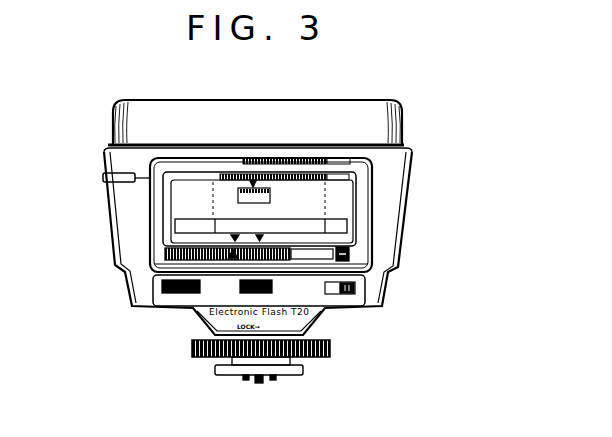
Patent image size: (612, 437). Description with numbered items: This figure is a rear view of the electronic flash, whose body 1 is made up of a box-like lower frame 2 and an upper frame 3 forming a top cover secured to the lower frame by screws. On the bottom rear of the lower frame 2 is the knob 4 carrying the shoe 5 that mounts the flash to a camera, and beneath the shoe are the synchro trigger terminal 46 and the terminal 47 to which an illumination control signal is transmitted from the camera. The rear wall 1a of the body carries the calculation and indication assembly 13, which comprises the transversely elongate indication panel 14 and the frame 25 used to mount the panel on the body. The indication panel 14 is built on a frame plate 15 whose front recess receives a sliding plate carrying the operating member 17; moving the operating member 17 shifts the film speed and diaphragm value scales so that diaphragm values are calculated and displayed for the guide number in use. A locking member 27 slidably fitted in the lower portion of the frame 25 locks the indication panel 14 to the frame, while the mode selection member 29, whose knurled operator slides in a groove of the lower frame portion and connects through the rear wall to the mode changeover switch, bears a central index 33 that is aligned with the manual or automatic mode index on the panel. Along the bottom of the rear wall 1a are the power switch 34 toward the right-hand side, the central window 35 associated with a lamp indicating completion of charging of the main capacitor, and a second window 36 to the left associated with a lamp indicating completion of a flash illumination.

The body 1 is at (441, 103).
The rear wall 1a is at (393, 162).
The lower frame 2 is at (103, 218).
The upper frame 3 is at (105, 154).
The knob 4 is at (330, 348).
The shoe 5 is at (303, 369).
The calculation and indication assembly 13 is at (227, 148).
The indication panel 14 is at (372, 205).
The frame plate 15 is at (360, 227).
The operating member 17 is at (272, 172).
The frame 25 is at (150, 197).
The locking member 27 is at (349, 262).
The mode selection member 29 is at (166, 255).
The index 33 is at (233, 260).
The power switch 34 is at (356, 288).
The window 35 is at (273, 287).
The auto check indicator 36 is at (163, 284).
The synchro trigger terminal 46 is at (259, 384).
The terminal 47 is at (275, 380).